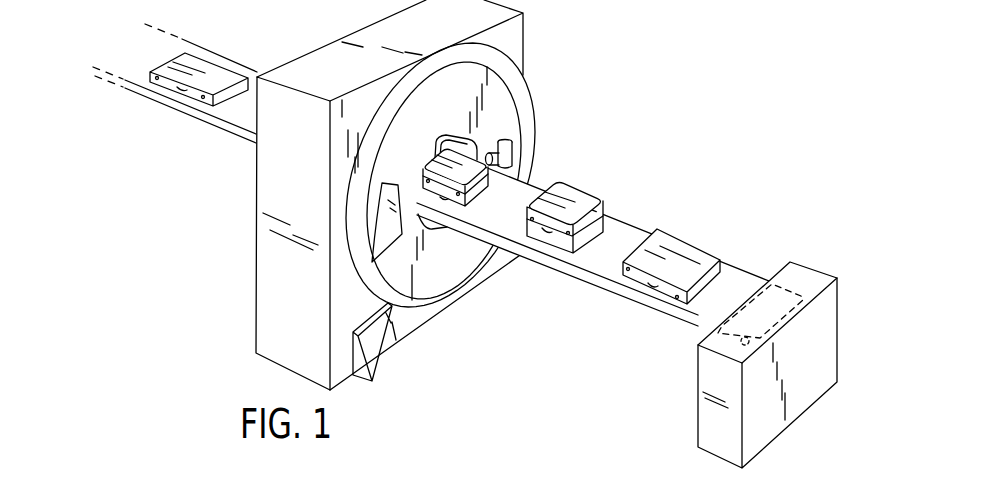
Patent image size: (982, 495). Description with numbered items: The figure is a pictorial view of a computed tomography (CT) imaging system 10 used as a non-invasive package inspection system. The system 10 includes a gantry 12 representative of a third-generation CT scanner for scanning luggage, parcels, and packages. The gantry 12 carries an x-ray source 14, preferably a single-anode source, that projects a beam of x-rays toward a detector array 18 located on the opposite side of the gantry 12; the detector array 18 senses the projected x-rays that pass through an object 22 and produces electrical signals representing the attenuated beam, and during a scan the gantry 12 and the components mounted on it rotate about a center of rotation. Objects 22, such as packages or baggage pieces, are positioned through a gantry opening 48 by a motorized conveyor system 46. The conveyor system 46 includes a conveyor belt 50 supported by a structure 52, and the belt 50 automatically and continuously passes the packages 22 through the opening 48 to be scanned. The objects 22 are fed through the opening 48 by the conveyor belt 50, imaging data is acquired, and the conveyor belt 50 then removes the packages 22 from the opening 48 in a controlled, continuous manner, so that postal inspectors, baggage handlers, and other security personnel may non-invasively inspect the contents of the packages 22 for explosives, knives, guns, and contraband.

The computed tomography (CT) imaging system 10 is at (699, 101).
The gantry 12 is at (520, 101).
The x-ray source 14 is at (512, 152).
The detector array 18 is at (384, 243).
The object 22 is at (208, 68).
The motorized conveyor system 46 is at (468, 246).
The gantry opening 48 is at (461, 146).
The conveyor belt 50 is at (228, 115).
The structure 52 is at (827, 338).